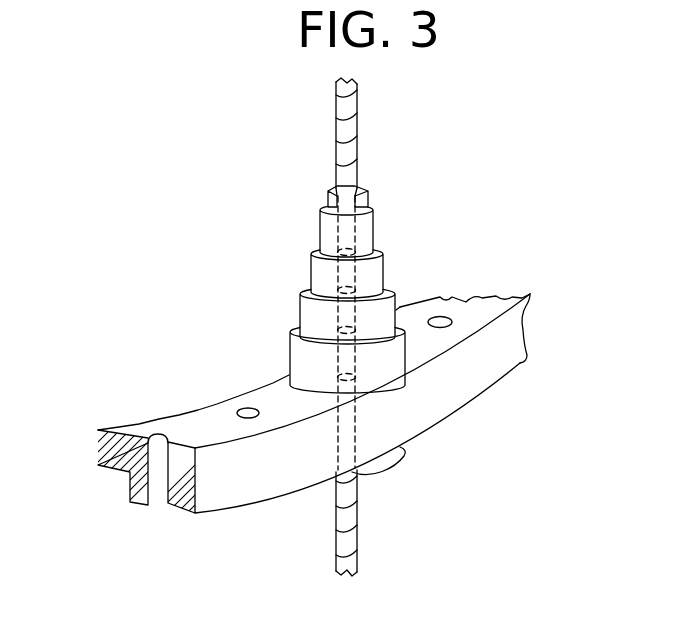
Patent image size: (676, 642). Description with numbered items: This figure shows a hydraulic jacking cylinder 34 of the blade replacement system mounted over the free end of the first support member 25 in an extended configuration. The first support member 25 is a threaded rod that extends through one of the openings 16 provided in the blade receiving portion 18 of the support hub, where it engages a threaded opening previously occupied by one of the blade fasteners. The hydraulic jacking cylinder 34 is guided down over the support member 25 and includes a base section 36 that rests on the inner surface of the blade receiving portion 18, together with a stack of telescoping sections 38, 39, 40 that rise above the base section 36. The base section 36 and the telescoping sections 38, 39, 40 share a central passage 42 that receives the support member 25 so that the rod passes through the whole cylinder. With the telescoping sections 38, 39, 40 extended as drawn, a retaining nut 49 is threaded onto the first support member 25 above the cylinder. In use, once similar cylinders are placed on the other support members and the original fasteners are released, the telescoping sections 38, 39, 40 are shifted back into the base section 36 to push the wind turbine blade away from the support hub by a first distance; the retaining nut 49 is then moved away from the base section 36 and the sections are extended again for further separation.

The opening 16 is at (247, 412).
The blade receiving portion 18 is at (466, 435).
The first support member 25 is at (292, 549).
The hydraulic jacking cylinder 34 is at (282, 305).
The base section 36 is at (297, 365).
The telescoping section 38 is at (310, 313).
The telescoping section 39 is at (320, 272).
The telescoping section 40 is at (368, 226).
The central passage 42 is at (380, 463).
The retaining nut 49 is at (328, 192).